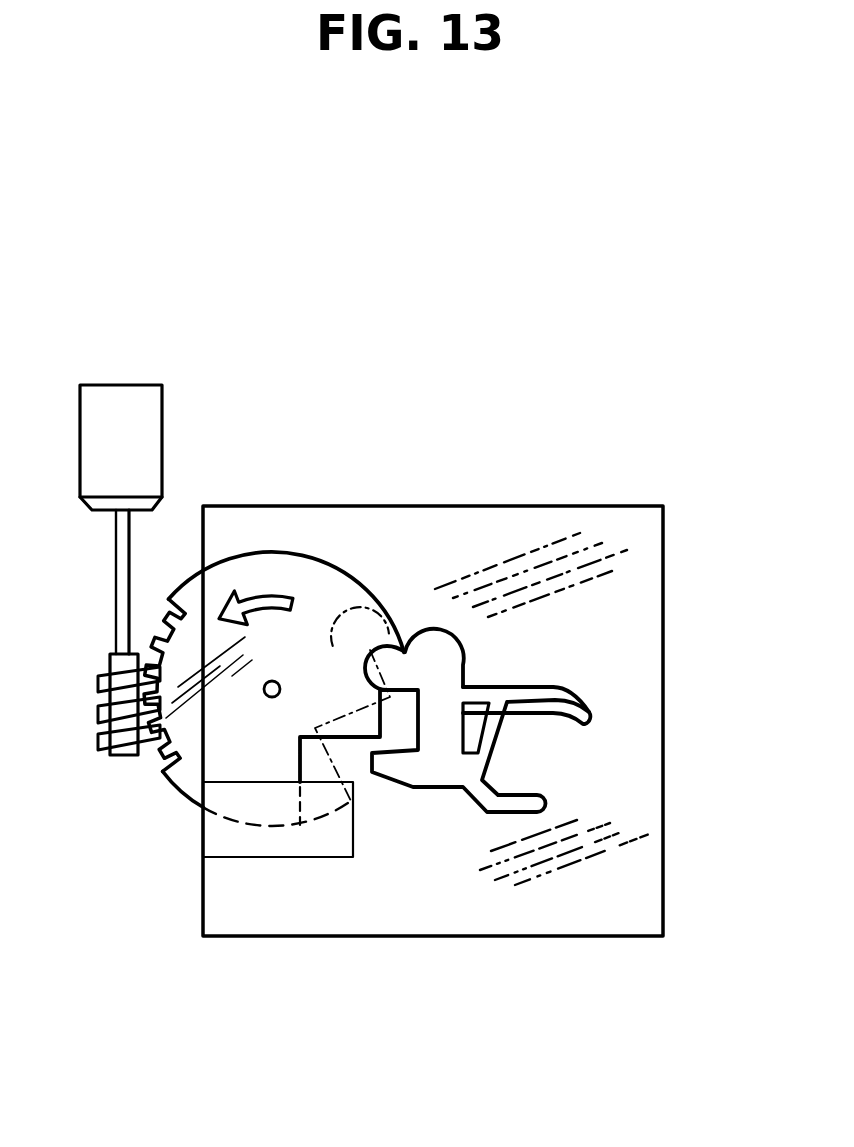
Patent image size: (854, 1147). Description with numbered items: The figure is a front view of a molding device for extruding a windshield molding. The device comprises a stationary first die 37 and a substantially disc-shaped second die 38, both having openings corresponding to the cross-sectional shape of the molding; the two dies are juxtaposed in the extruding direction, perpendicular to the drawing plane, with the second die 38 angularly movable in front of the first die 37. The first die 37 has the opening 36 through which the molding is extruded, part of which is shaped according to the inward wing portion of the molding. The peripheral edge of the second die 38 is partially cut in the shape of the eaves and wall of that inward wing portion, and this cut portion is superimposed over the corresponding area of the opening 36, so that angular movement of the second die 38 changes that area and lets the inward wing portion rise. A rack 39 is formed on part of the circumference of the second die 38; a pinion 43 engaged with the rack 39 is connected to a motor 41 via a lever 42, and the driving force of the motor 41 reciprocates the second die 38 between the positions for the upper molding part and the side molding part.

The opening 36 is at (438, 772).
The first die 37 is at (642, 780).
The second die 38 is at (310, 582).
The rack 39 is at (151, 612).
The motor 41 is at (143, 441).
The lever 42 is at (116, 547).
The pinion 43 is at (103, 735).